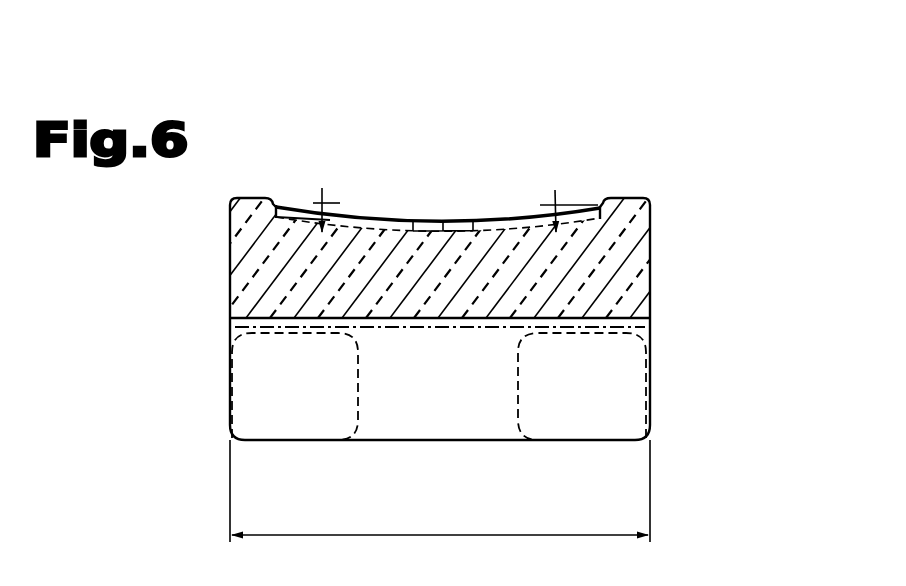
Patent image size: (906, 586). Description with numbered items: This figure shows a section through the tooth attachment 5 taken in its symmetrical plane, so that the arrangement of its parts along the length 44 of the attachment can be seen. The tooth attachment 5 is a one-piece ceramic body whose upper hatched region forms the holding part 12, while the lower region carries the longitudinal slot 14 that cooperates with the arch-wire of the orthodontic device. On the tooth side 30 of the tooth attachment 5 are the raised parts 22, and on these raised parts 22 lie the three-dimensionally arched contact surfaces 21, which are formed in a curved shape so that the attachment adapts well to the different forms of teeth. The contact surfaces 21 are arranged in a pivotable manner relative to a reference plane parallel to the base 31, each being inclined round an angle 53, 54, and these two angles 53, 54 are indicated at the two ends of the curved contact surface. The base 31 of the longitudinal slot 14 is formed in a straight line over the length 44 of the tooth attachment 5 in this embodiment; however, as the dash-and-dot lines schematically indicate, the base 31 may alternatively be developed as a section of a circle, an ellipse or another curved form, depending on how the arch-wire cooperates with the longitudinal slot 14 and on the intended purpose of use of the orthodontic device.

The tooth attachment 5 is at (727, 152).
The holding part 12 is at (650, 256).
The longitudinal slot 14 is at (412, 418).
The contact surfaces 21 is at (302, 200).
The raised parts 22 is at (503, 216).
The tooth side 30 is at (353, 117).
The base 31 is at (360, 320).
The length 44 is at (494, 532).
The angle 53 is at (321, 184).
The angle 54 is at (557, 190).